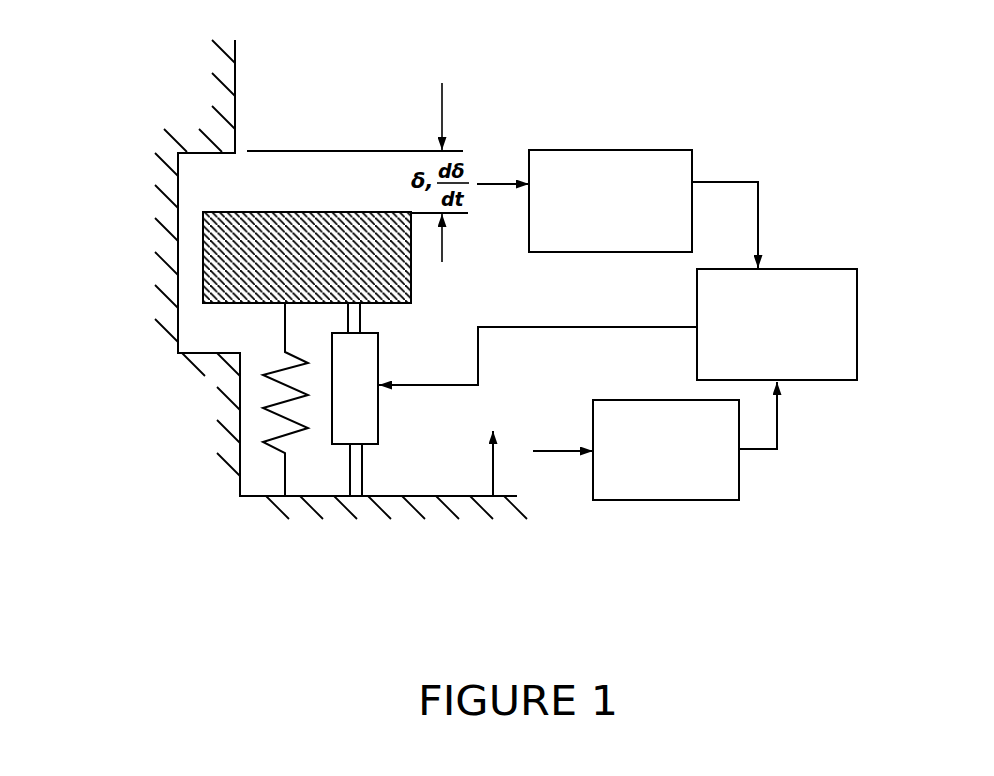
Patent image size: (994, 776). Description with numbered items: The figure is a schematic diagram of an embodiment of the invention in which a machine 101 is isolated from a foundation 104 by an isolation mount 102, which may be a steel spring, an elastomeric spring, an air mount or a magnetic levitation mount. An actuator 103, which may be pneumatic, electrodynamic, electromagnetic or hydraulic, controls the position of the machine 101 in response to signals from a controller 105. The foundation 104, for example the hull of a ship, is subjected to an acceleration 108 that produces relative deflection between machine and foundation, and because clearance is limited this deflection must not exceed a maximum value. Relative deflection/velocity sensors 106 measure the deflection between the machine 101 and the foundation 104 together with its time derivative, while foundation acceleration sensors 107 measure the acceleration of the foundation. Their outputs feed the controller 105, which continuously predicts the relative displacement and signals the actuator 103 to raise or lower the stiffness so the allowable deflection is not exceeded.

The machine 101 is at (230, 250).
The isolation mount 102 is at (278, 388).
The actuator 103 is at (342, 430).
The foundation 104 is at (388, 498).
The controller 105 is at (822, 382).
The relative deflection/velocity sensors 106 is at (648, 148).
The foundation acceleration sensors 107 is at (635, 503).
The acceleration 108 is at (493, 468).